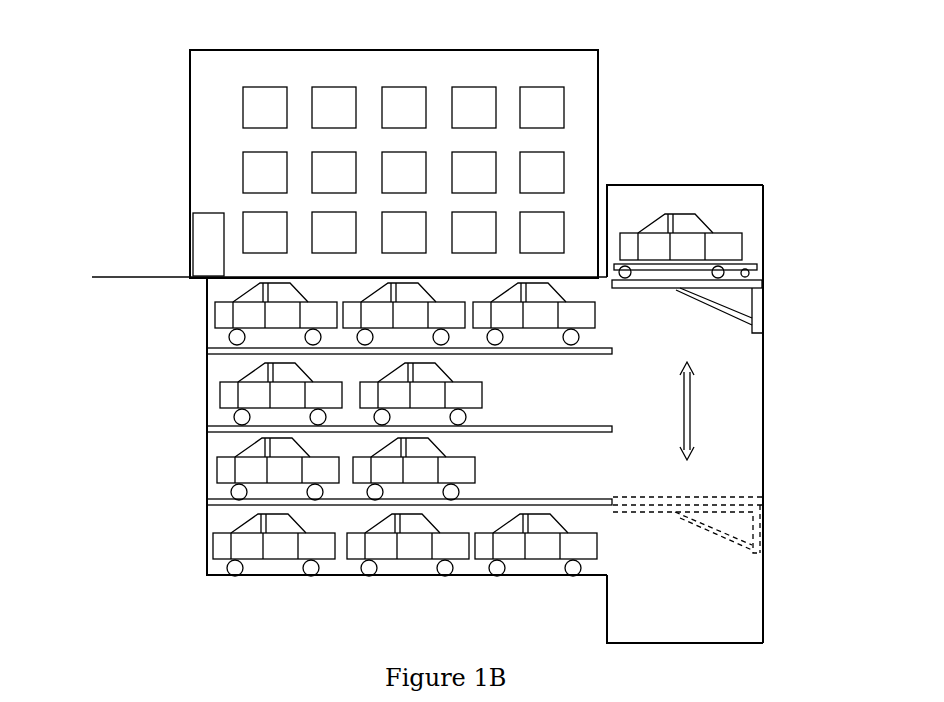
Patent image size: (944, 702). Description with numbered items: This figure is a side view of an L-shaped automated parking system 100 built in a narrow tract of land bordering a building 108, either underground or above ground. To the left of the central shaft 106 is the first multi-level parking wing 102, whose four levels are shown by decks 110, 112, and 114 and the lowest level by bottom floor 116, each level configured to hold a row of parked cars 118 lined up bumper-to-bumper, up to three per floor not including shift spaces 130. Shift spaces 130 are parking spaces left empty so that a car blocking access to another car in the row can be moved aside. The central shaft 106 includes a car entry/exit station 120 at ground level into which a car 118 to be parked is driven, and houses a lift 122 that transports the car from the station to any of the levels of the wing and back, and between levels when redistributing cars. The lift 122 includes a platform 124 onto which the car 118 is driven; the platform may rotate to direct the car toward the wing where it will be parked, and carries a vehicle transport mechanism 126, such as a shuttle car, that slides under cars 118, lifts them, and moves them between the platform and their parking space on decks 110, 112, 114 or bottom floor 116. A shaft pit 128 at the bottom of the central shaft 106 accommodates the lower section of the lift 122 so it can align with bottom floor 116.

The automated parking system 100 is at (657, 158).
The first multi-level parking wing 102 is at (207, 378).
The central shaft 106 is at (765, 372).
The building 108 is at (187, 133).
The deck 110 is at (207, 343).
The deck 112 is at (213, 433).
The deck 114 is at (212, 505).
The bottom floor 116 is at (207, 567).
The car 118 is at (227, 317).
The car entry/exit station 120 is at (722, 185).
The lift 122 is at (763, 308).
The platform 124 is at (750, 281).
The vehicle transport mechanism 126 is at (843, 275).
The shaft pit 128 is at (708, 623).
The shift space 130 is at (548, 398).